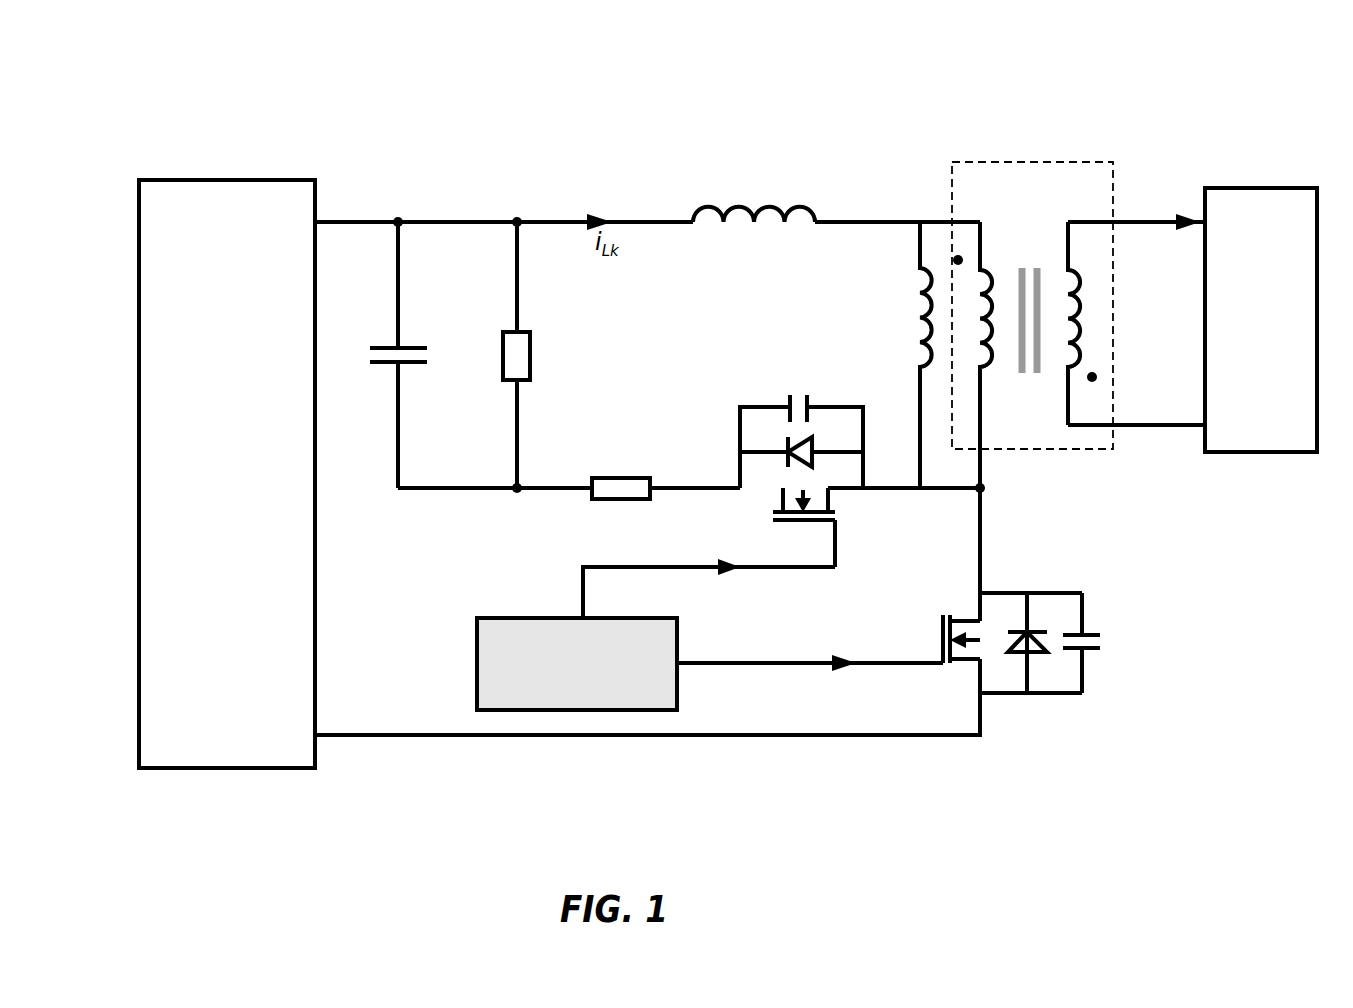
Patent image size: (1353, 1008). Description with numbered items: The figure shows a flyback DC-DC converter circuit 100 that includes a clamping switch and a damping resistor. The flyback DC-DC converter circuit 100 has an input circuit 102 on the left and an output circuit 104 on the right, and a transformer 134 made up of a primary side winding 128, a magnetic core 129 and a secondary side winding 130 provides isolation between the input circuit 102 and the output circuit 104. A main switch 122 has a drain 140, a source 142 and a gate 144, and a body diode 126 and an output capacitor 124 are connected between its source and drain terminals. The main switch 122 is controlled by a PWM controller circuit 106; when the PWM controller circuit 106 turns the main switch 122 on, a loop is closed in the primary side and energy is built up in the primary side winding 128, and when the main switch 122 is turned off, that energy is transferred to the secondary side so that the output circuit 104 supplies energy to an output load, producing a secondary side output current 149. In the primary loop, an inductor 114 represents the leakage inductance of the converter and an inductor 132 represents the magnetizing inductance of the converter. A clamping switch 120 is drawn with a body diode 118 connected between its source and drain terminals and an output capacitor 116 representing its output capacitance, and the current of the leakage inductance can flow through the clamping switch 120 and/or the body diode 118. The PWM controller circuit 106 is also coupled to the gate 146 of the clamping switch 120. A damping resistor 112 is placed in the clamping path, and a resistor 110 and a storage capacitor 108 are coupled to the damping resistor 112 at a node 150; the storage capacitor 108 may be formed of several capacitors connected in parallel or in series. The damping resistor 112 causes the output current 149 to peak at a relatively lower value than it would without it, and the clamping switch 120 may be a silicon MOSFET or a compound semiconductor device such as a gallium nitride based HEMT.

The flyback DC-DC converter circuit 100 is at (196, 28).
The input circuit 102 is at (138, 765).
The output circuit 104 is at (1265, 452).
The PWM controller circuit 106 is at (475, 657).
The storage capacitor 108 is at (383, 343).
The resistor 110 is at (507, 332).
The damping resistor 112 is at (637, 478).
The inductor 114 is at (705, 210).
The output capacitor 116 is at (795, 395).
The body diode 118 is at (790, 446).
The clamping switch 120 is at (836, 502).
The main switch 122 is at (960, 618).
The output capacitor 124 is at (1088, 650).
The body diode 126 is at (1030, 628).
The primary side winding 128 is at (985, 268).
The magnetic core 129 is at (1020, 378).
The secondary side winding 130 is at (1085, 272).
The inductor 132 is at (922, 316).
The transformer 134 is at (1083, 162).
The drain 140 is at (985, 577).
The source 142 is at (985, 705).
The gate 144 is at (765, 663).
The gate 146 is at (660, 567).
The secondary side output current 149 is at (1138, 220).
The node 150 is at (478, 490).